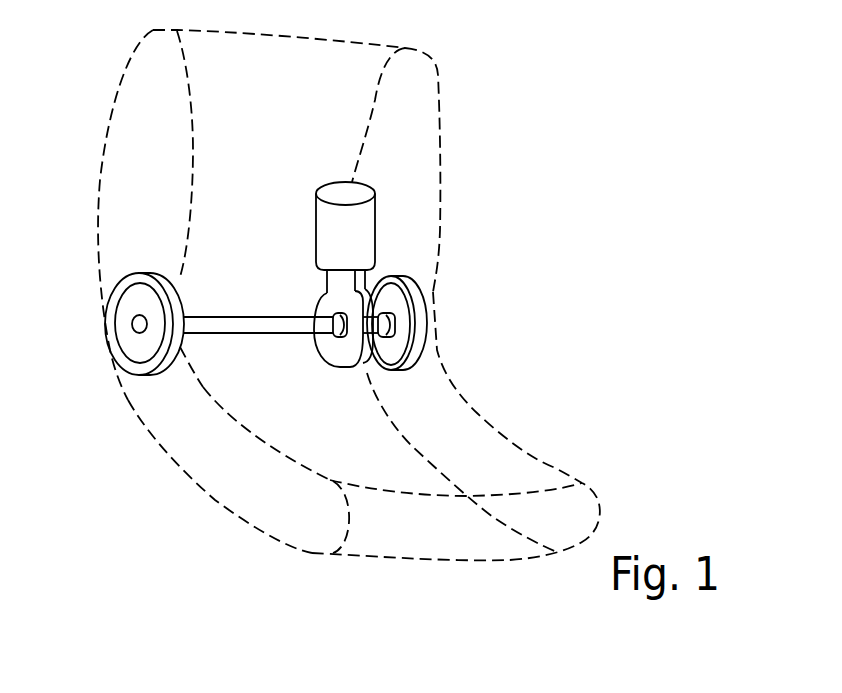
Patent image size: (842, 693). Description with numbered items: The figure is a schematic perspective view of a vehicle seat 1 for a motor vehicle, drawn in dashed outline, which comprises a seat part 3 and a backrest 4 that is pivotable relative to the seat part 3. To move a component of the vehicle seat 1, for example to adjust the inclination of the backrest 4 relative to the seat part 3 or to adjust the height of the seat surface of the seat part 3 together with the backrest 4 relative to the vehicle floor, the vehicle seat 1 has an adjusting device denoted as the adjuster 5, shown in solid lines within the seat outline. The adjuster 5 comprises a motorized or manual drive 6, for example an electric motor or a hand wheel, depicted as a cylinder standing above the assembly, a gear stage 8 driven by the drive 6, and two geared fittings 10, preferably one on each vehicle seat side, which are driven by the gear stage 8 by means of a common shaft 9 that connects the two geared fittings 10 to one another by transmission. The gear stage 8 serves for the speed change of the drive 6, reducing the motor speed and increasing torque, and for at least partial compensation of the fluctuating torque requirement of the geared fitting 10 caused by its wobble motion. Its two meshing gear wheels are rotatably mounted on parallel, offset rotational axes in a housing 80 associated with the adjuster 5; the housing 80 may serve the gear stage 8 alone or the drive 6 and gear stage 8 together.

The vehicle seat 1 is at (379, 295).
The seat part 3 is at (510, 453).
The backrest 4 is at (417, 140).
The adjuster 5 is at (307, 303).
The drive 6 is at (348, 233).
The gear stage 8 is at (312, 281).
The housing 80 is at (333, 347).
The shaft 9 is at (335, 332).
The geared fitting 10 is at (140, 347).